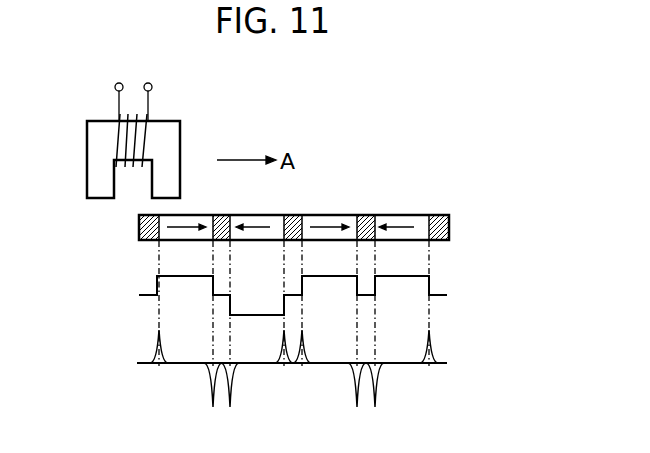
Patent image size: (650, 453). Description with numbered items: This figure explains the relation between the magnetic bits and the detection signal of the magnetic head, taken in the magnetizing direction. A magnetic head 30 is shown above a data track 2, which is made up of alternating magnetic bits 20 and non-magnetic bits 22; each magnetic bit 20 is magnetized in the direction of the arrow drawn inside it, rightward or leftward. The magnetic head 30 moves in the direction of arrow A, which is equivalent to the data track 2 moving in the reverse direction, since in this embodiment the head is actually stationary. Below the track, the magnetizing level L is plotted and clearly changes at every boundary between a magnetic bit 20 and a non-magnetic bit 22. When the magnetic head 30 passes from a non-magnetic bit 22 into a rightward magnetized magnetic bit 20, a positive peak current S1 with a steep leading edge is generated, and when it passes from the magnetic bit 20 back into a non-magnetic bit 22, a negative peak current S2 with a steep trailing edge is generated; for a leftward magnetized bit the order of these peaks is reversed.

The magnetic head 30 is at (182, 138).
The data track 2 is at (325, 206).
The non-magnetic bit 22 is at (220, 213).
The magnetic bit 20 is at (257, 213).
The magnetizing level L is at (258, 310).
The positive peak current S1 is at (155, 346).
The negative peak current S2 is at (211, 396).